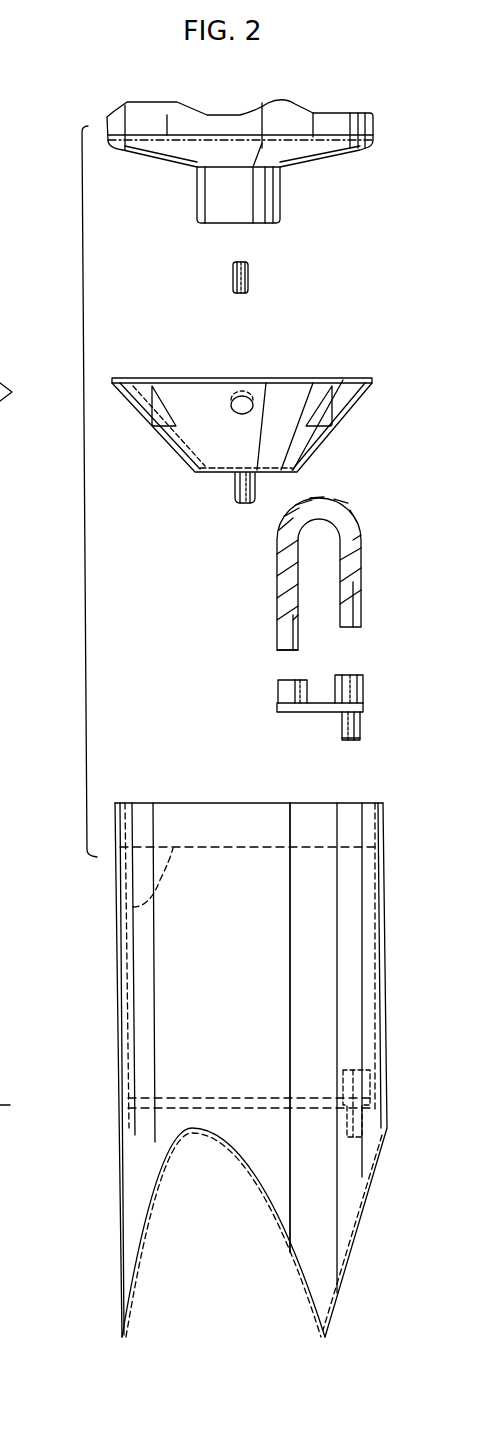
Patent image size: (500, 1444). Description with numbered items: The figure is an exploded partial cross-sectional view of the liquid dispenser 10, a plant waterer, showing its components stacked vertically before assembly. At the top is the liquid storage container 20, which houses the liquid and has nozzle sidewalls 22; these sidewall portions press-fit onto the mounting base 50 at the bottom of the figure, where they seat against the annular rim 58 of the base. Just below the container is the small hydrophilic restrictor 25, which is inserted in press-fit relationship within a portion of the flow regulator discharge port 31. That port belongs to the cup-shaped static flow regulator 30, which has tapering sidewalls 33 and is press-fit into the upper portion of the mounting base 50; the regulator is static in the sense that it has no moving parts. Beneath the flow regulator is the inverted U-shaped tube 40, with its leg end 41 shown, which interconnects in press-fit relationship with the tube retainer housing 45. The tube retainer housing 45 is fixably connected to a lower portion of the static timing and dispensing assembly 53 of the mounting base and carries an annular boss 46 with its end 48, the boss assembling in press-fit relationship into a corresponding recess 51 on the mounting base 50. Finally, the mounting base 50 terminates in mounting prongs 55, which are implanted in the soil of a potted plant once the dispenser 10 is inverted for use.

The liquid dispenser 10 is at (80, 1200).
The liquid storage container 20 is at (207, 142).
The nozzle sidewalls 22 is at (262, 190).
The hydrophilic restrictor 25 is at (250, 284).
The static flow regulator 30 is at (261, 430).
The flow regulator discharge port 31 is at (245, 490).
The tapering sidewalls 33 is at (332, 437).
The inverted U-shaped tube 40 is at (273, 580).
The clip leg end 41 is at (282, 628).
The tube retainer housing 45 is at (298, 727).
The annular boss 46 is at (360, 730).
The bracket post end 48 is at (350, 740).
The mounting base 50 is at (230, 1070).
The recess 51 is at (390, 1075).
The static timing and dispensing assembly 53 is at (320, 935).
The mounting prongs 55 is at (312, 1222).
The annular rim 58 is at (133, 907).